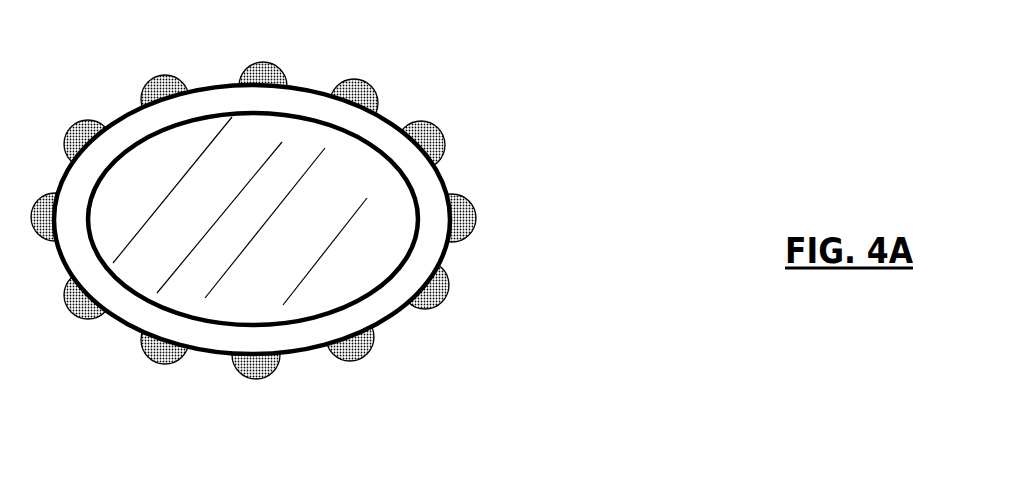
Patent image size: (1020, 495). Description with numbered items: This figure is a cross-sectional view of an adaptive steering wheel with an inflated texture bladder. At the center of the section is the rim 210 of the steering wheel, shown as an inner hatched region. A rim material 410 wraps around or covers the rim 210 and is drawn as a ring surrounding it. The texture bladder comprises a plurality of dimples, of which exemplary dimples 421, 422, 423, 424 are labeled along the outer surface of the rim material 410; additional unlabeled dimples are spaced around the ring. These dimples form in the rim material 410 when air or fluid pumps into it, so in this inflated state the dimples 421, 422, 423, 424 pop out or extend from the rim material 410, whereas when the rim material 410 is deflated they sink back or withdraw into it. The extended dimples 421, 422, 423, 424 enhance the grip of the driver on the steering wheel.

The rim material 410 is at (441, 177).
The dimple 421 is at (157, 75).
The dimple 422 is at (272, 62).
The dimple 423 is at (360, 80).
The dimple 424 is at (417, 121).
The rim 210 is at (238, 307).